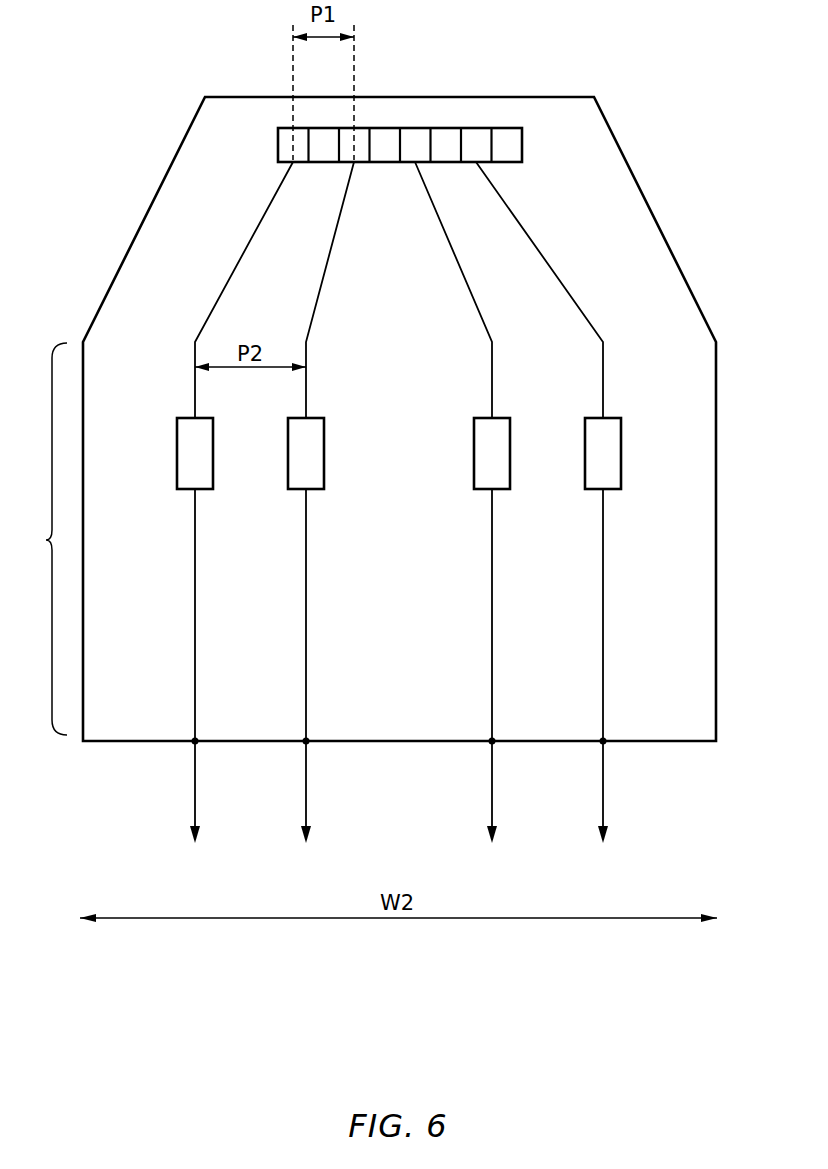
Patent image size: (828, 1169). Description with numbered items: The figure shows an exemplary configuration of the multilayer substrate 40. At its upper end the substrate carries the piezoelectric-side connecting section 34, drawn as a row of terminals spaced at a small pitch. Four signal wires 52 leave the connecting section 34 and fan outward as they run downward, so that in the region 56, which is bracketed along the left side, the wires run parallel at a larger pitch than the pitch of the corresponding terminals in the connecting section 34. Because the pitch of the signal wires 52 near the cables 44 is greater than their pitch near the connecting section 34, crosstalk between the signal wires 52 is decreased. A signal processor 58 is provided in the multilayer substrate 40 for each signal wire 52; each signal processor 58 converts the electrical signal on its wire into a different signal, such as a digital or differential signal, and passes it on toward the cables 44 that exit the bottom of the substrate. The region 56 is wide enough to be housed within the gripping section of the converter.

The piezoelectric-side connecting section 34 is at (277, 143).
The multilayer substrate 40 is at (412, 1021).
The cable 44 is at (195, 785).
The signal wire 52 is at (195, 393).
The region 56 is at (42, 539).
The signal processor 58 is at (203, 490).